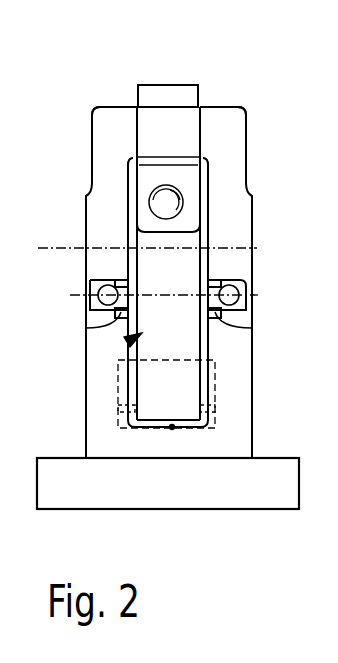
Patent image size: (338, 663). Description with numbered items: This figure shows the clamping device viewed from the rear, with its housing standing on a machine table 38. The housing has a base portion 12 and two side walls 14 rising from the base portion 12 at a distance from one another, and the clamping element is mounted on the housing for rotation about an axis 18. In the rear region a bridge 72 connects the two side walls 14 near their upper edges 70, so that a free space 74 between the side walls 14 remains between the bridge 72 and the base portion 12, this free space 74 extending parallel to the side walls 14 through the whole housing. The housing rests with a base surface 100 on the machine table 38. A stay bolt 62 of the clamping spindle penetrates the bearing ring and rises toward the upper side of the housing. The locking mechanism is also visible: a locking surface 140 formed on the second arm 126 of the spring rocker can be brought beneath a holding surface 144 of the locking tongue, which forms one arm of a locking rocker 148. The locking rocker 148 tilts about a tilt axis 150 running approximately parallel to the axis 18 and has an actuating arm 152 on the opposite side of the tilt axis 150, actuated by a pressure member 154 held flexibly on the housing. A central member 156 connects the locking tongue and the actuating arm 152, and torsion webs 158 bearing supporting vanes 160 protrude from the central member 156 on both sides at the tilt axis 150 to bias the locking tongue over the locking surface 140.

The base portion 12 is at (170, 446).
The side walls 14 is at (97, 156).
The axis 18 is at (56, 244).
The machine table 38 is at (285, 488).
The stay bolt 62 is at (178, 92).
The upper edges 70 is at (113, 106).
The bridge 72 is at (178, 133).
The free space 74 is at (130, 203).
The base surface 100 is at (210, 460).
The second arm 126 is at (118, 408).
The locking surface 140 is at (205, 398).
The holding surface 144 is at (141, 428).
The locking rocker 148 is at (130, 342).
The tilt axis 150 is at (258, 292).
The actuating arm 152 is at (155, 258).
The pressure member 154 is at (185, 212).
The central member 156 is at (124, 318).
The torsion webs 158 is at (248, 325).
The supporting vanes 160 is at (232, 283).